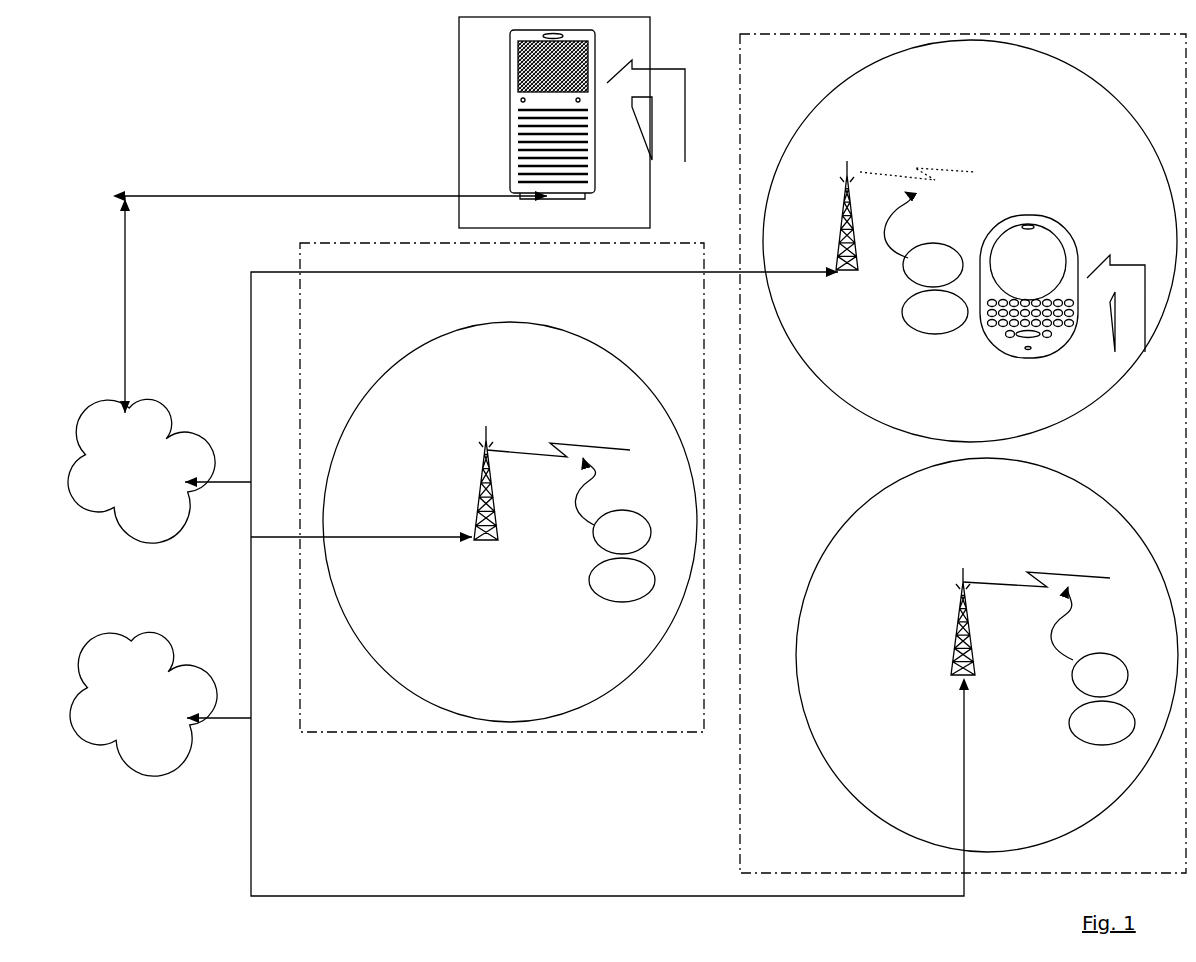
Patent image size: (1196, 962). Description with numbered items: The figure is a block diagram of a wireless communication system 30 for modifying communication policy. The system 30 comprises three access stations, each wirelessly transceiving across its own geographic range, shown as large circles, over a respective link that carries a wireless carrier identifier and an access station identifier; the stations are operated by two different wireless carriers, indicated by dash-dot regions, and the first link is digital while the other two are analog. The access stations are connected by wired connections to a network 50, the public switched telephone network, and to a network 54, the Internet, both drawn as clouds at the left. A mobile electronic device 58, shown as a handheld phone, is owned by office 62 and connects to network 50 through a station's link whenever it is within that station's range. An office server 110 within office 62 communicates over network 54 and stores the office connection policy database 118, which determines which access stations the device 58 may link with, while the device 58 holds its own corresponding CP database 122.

The wireless communication system 30 is at (291, 127).
The office 62 is at (428, 148).
The office server 110 is at (505, 110).
The office connection policy (CP) database 118 is at (650, 132).
The CP database 122 is at (1119, 325).
The mobile electronic device 58 is at (1052, 210).
The network 54 is at (141, 471).
The network 50 is at (143, 704).